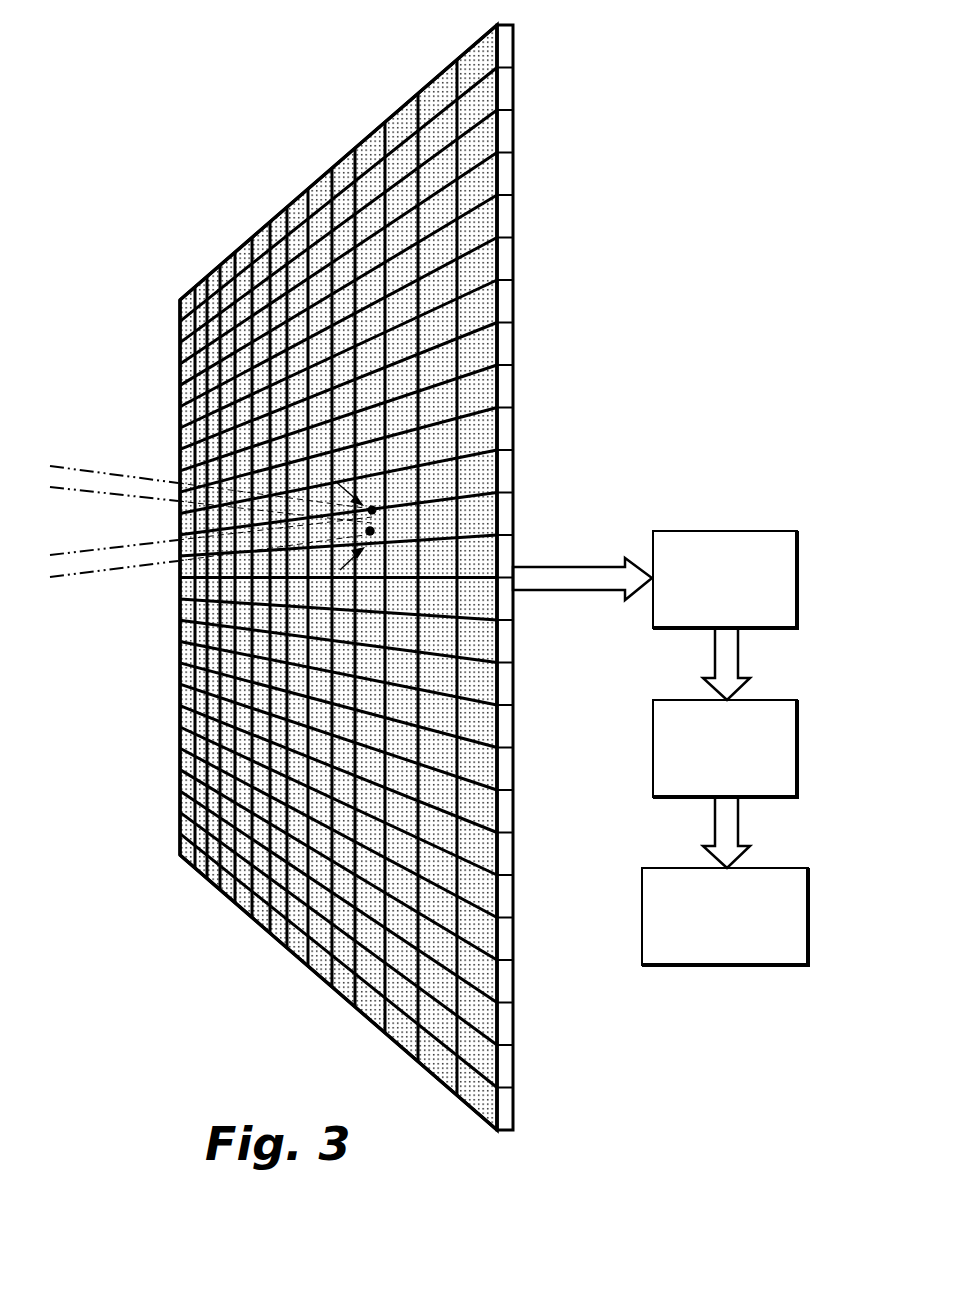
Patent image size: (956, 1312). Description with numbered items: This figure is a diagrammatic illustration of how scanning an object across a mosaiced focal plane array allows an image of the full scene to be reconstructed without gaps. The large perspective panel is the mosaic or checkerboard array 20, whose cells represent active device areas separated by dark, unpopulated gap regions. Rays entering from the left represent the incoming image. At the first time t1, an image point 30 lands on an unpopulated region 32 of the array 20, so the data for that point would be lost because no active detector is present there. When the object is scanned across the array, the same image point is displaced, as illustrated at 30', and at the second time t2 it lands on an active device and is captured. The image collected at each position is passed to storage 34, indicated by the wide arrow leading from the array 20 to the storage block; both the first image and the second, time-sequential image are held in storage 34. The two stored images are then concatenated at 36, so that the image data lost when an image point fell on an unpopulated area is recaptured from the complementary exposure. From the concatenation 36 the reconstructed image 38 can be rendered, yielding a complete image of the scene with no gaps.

The mosaic or checkerboard array 20 is at (518, 169).
The image point 30 is at (485, 483).
The unpopulated region 32 is at (375, 528).
The displaced image point 30' is at (483, 579).
The storage 34 is at (762, 530).
The concatenation 36 is at (773, 700).
The reconstructed image 38 is at (766, 868).
The first time t1 is at (335, 481).
The second time t2 is at (340, 570).